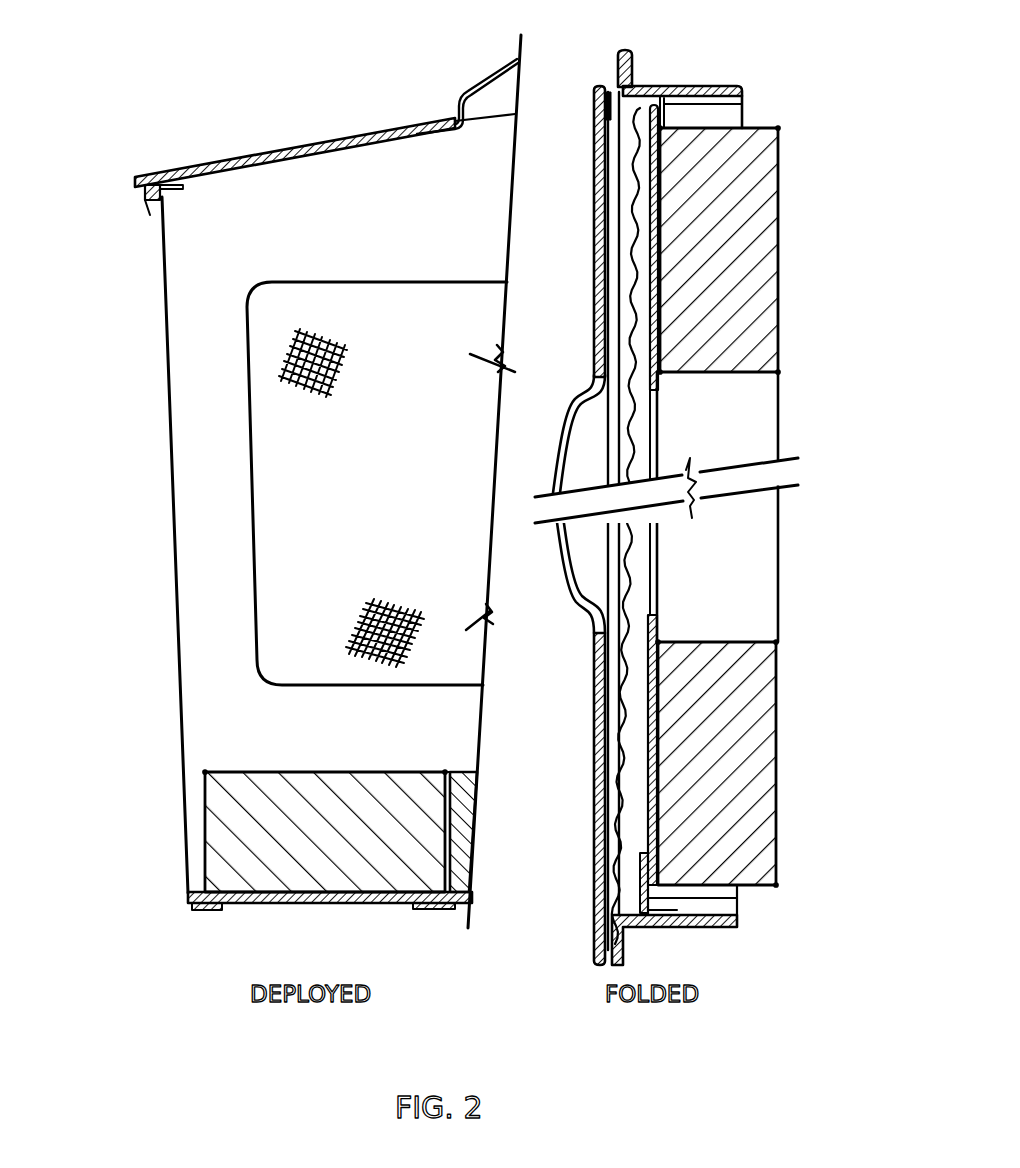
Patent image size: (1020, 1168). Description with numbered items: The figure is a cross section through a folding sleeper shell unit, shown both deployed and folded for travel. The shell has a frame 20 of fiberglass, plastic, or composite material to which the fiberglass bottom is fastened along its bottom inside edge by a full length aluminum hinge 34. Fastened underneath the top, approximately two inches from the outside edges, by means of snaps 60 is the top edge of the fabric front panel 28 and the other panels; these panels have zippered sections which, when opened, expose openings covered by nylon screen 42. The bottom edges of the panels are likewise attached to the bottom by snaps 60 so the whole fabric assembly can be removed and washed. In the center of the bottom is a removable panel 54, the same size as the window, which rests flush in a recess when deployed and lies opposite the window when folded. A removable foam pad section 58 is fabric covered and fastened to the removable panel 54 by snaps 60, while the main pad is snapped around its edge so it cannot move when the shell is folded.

The frame 20 is at (692, 86).
The front panel 28 is at (210, 478).
The hinge 34 is at (616, 88).
The screen 42 is at (268, 407).
The removable panel 54 is at (455, 880).
The removable foam pad section 58 is at (466, 773).
The snaps 60 is at (176, 190).